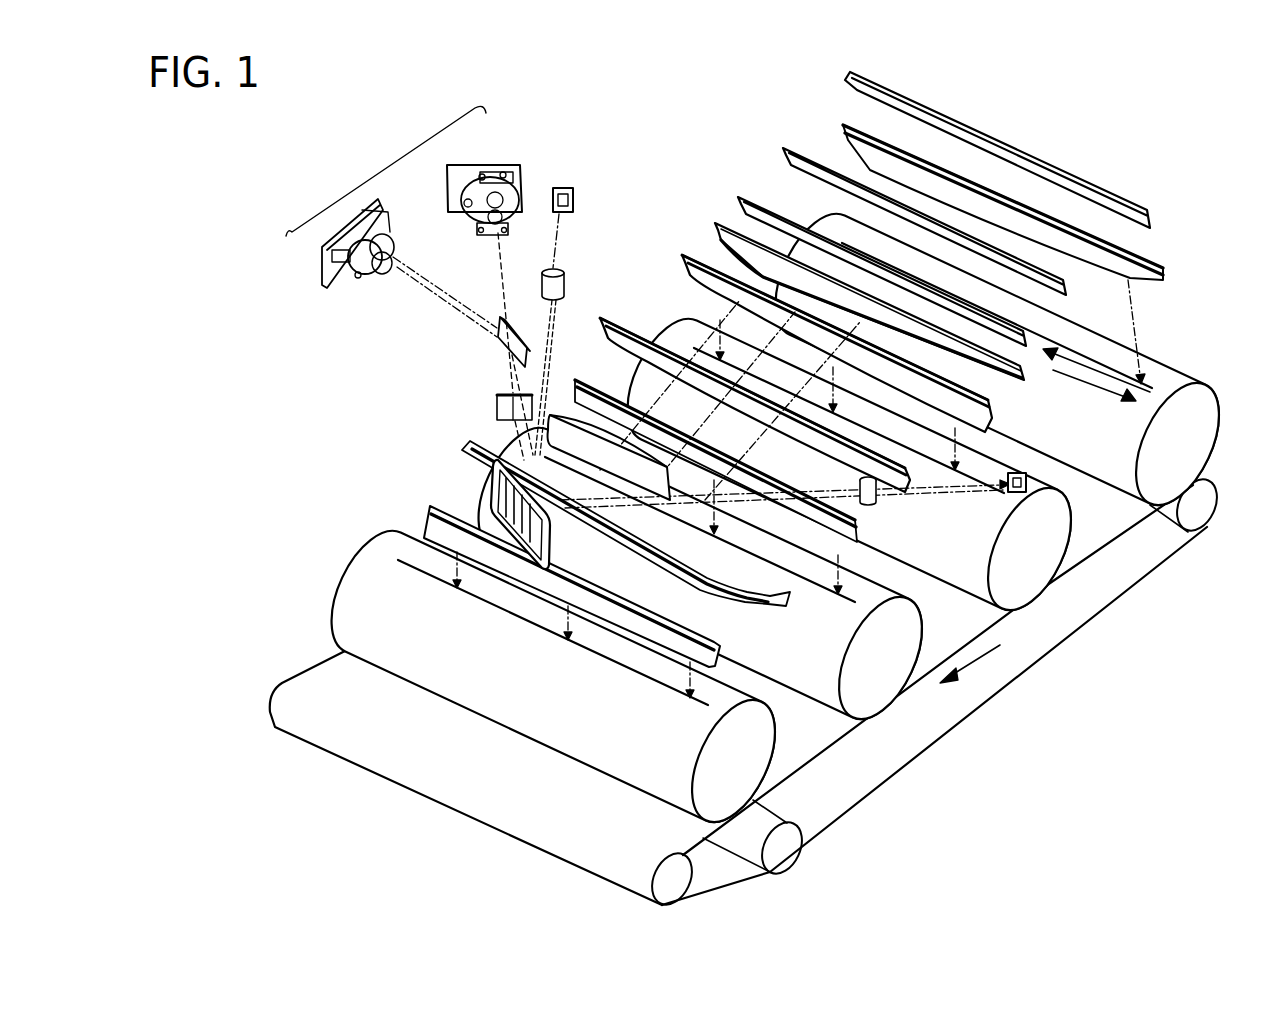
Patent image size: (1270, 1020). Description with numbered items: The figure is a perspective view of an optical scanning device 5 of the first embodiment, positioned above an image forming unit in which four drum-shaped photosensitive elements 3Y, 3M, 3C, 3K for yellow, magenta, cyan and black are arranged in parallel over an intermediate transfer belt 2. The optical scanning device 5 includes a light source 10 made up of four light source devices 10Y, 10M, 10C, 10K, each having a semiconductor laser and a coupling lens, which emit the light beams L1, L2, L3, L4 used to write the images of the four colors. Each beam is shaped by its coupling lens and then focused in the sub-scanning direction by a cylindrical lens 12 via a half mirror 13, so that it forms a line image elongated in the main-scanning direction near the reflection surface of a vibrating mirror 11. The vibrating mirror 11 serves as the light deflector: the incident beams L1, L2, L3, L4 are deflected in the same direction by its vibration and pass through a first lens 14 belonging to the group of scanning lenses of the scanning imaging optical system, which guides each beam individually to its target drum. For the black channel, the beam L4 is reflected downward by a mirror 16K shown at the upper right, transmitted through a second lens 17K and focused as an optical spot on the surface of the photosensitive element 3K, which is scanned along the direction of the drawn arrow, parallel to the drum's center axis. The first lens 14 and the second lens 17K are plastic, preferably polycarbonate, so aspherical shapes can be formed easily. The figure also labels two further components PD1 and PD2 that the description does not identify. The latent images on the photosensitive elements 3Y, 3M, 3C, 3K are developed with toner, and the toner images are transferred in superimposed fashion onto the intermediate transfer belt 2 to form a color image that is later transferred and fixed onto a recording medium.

The intermediate transfer belt 2 is at (790, 755).
The photosensitive element 3Y is at (686, 800).
The photosensitive element 3M is at (832, 695).
The photosensitive element 3C is at (975, 595).
The photosensitive element 3K is at (1120, 477).
The optical scanning device 5 is at (714, 154).
The light source 10 is at (386, 166).
The light source device 10Y is at (392, 270).
The light source device 10M is at (396, 240).
The light source device 10C is at (470, 225).
The light source device 10K is at (490, 165).
The vibrating mirror 11 is at (493, 490).
The cylindrical lens 12 is at (497, 411).
The half mirror 13 is at (498, 345).
The first lens 14 is at (553, 416).
The mirror 16K is at (950, 100).
The second lens 17K is at (1088, 262).
The photodetector (synchronization) PD1 is at (575, 198).
The photodetector PD2 is at (1026, 478).
The light beam L1 is at (730, 660).
The light beam L2 is at (865, 541).
The light beam L3 is at (995, 432).
The light beam L4 is at (1138, 313).